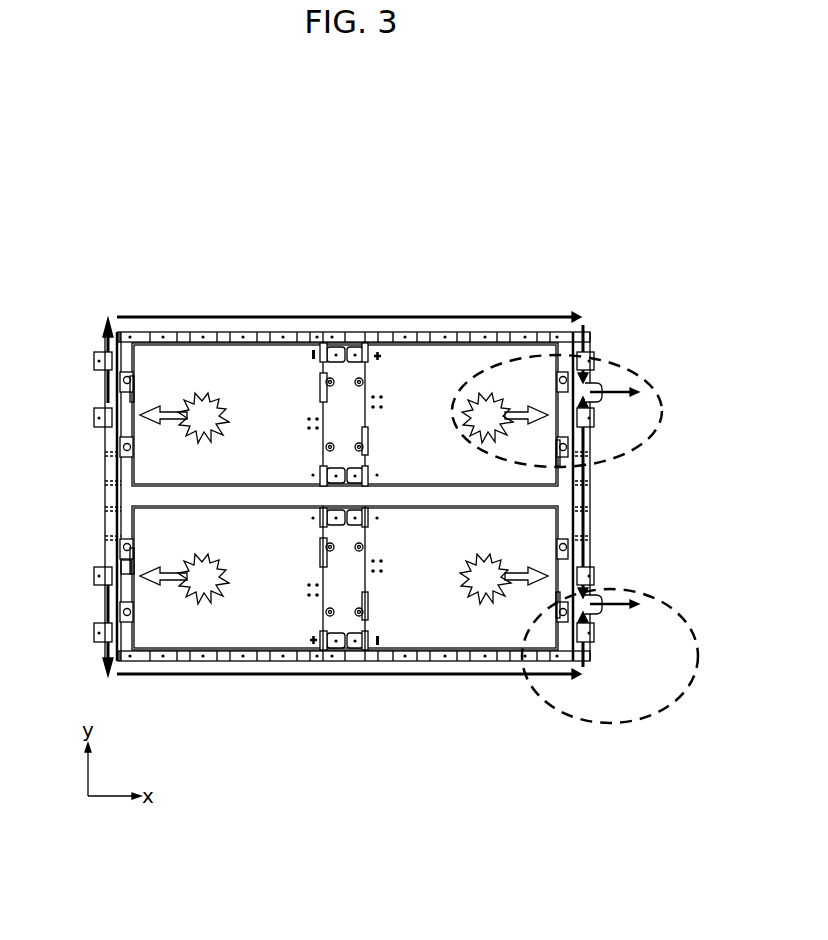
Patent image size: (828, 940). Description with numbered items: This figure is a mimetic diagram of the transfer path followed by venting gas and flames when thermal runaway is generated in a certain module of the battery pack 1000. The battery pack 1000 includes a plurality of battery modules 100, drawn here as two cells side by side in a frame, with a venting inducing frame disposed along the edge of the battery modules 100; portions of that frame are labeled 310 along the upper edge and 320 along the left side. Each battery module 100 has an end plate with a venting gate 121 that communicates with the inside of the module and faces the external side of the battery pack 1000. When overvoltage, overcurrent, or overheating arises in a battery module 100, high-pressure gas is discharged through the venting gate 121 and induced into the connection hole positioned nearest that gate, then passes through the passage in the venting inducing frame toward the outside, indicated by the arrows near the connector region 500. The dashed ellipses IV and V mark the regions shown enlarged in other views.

The battery pack 1000 is at (163, 262).
The top end plate / rail 310 is at (263, 332).
The battery module 100 is at (424, 352).
The side plate 320 is at (108, 447).
The venting gate 121 is at (120, 566).
The connector 500 is at (601, 597).
The section IV is at (630, 372).
The section V is at (670, 606).